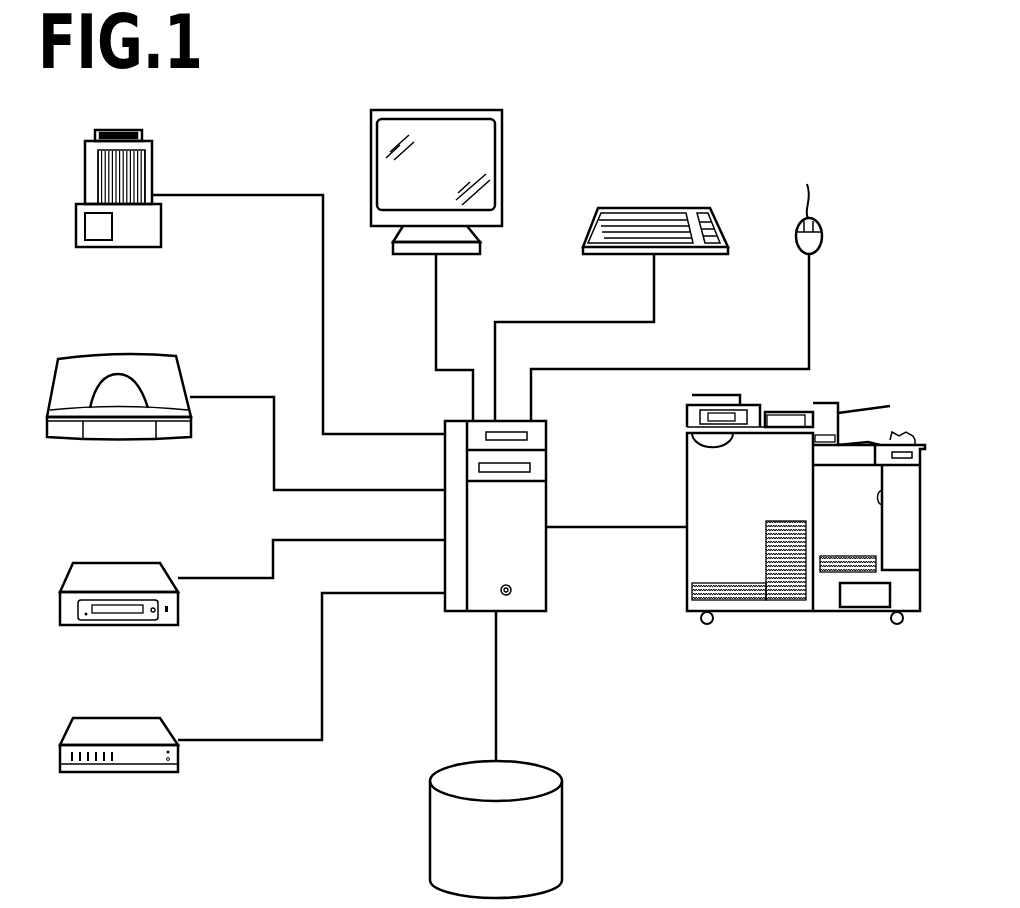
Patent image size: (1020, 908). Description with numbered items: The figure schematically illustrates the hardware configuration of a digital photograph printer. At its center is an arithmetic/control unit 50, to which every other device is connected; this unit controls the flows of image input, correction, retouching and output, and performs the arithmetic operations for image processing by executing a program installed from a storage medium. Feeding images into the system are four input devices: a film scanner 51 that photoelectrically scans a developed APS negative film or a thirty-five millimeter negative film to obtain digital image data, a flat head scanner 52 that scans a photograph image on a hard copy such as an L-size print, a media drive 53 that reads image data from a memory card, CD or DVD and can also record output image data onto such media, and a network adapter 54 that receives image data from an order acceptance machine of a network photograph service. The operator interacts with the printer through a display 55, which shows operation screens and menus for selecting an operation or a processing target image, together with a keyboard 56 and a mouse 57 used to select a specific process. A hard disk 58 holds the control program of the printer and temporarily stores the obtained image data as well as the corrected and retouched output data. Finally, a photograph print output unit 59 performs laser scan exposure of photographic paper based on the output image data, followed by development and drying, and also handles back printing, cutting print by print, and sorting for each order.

The arithmetic/control unit 50 is at (548, 462).
The film scanner 51 is at (153, 150).
The flat head scanner 52 is at (148, 356).
The media drive 53 is at (147, 563).
The network adapter 54 is at (147, 718).
The display 55 is at (503, 133).
The keyboard 56 is at (701, 207).
The mouse 57 is at (823, 234).
The hard disk 58 is at (563, 811).
The photograph print output unit 59 is at (822, 403).